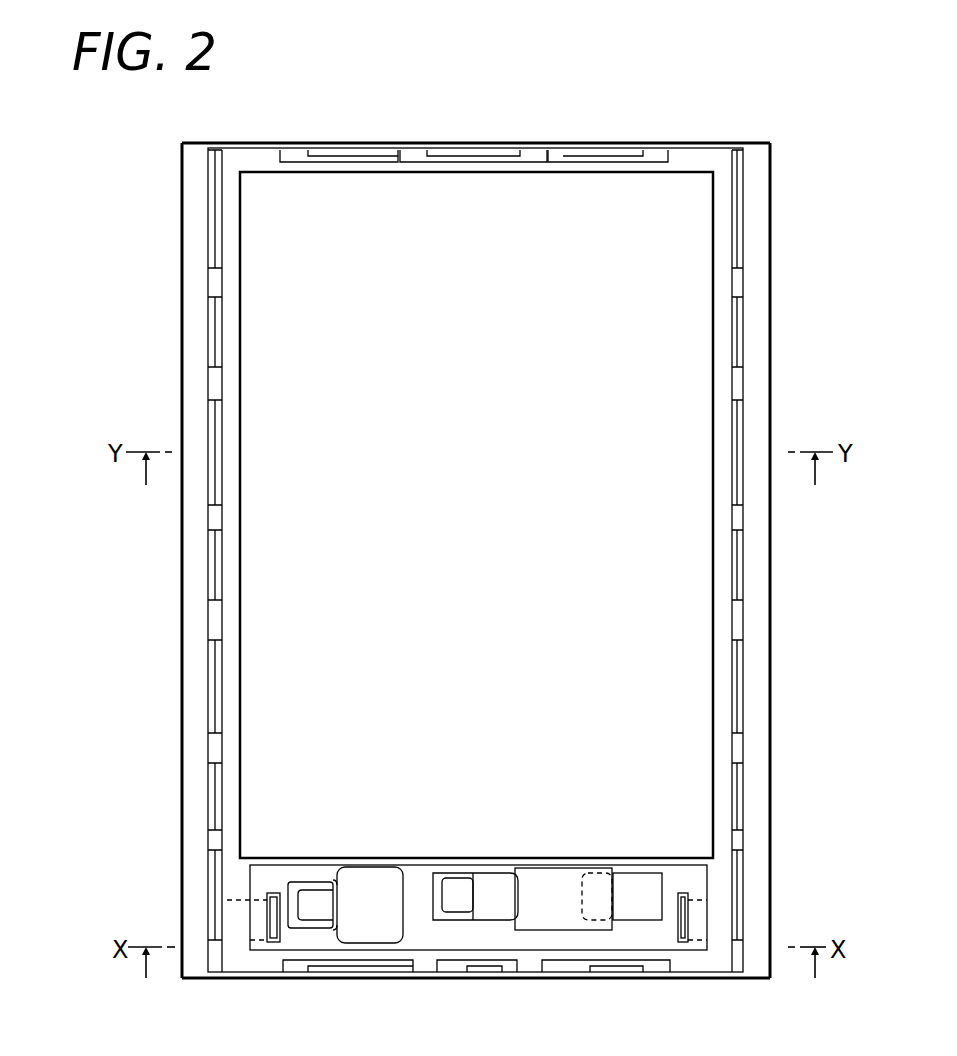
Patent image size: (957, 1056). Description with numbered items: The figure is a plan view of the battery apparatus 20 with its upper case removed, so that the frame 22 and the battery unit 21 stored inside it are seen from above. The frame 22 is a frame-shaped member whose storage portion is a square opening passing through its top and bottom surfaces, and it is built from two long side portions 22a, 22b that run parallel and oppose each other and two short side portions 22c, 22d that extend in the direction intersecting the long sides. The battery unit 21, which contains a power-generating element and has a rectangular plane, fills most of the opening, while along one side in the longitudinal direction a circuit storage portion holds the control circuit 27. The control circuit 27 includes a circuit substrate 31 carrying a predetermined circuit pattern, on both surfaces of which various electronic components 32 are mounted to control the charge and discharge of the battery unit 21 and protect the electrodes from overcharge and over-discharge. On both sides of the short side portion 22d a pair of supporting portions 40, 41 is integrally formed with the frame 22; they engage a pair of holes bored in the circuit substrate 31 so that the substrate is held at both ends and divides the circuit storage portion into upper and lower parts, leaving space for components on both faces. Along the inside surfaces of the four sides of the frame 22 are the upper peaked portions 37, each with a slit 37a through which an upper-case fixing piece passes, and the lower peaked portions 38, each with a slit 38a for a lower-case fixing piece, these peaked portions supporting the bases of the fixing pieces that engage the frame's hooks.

The battery apparatus 20 is at (205, 132).
The battery unit 21 is at (473, 554).
The frame 22 is at (760, 136).
The long side portion 22a is at (182, 192).
The long side portion 22b is at (770, 212).
The short side portion 22c is at (690, 142).
The short side portion 22d is at (740, 980).
The control circuit 27 is at (414, 850).
The circuit substrate 31 is at (425, 935).
The electronic components 32 is at (627, 878).
The upper peaked portion 37 is at (405, 150).
The slit 37a is at (470, 150).
The lower peaked portion 38 is at (283, 150).
The slit 38a is at (345, 150).
The supporting portion 40 is at (268, 945).
The supporting portion 41 is at (690, 945).